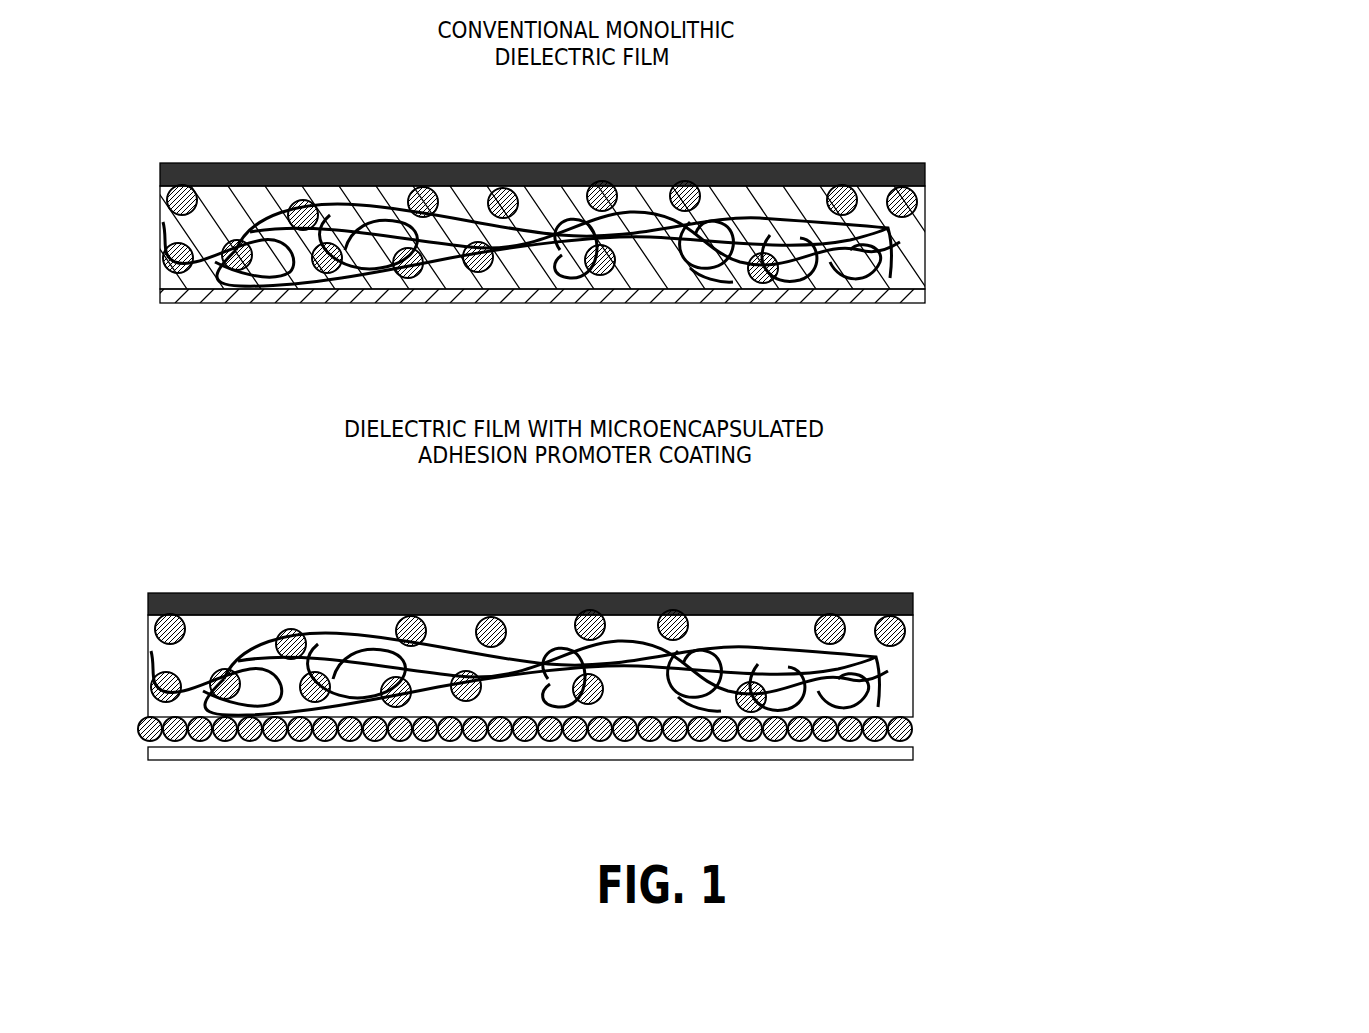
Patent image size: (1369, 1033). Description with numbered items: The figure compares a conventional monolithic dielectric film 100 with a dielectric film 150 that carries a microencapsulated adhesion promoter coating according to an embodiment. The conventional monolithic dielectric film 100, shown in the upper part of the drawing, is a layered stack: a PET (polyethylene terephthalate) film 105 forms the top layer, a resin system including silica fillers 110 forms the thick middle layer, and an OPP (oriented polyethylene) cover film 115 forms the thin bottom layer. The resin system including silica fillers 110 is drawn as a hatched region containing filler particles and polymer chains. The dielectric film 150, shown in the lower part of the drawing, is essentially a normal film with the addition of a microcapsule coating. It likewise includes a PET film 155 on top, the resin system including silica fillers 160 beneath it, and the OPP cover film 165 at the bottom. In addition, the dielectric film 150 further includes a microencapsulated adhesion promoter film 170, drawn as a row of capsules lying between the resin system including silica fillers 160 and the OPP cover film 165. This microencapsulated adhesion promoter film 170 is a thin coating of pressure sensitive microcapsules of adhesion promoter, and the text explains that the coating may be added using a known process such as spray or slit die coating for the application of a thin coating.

The conventional monolithic dielectric film 100 is at (565, 96).
The PET film 105 is at (925, 172).
The resin system including silica fillers 110 is at (900, 227).
The OPP cover film 115 is at (918, 296).
The dielectric film 150 is at (666, 666).
The PET film 155 is at (913, 605).
The resin system including silica fillers 160 is at (903, 655).
The OPP cover film 165 is at (913, 755).
The microencapsulated adhesion promoter film 170 is at (913, 729).